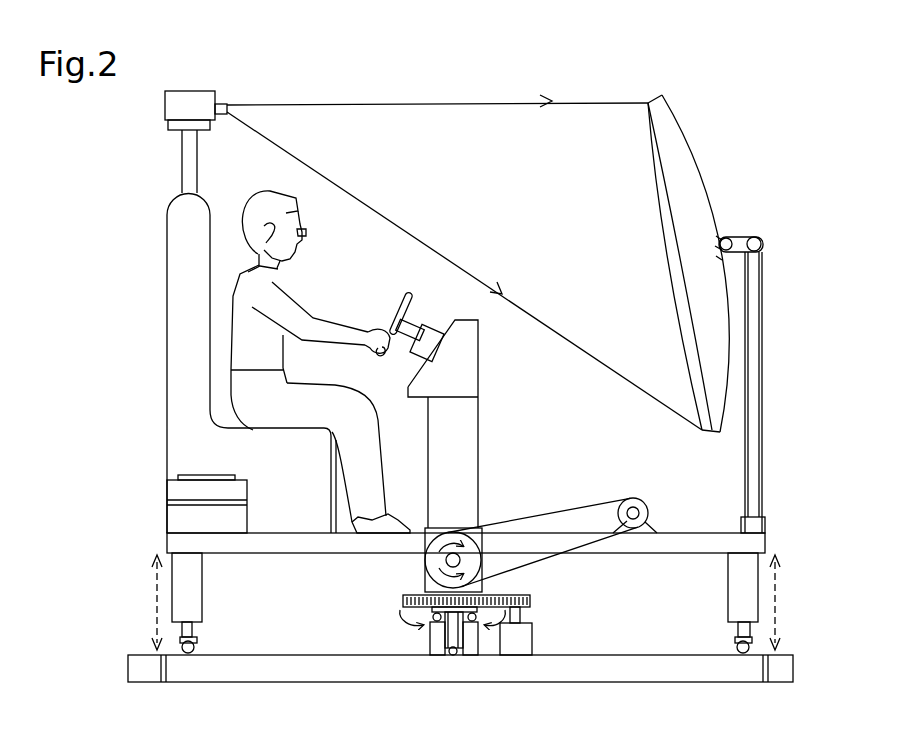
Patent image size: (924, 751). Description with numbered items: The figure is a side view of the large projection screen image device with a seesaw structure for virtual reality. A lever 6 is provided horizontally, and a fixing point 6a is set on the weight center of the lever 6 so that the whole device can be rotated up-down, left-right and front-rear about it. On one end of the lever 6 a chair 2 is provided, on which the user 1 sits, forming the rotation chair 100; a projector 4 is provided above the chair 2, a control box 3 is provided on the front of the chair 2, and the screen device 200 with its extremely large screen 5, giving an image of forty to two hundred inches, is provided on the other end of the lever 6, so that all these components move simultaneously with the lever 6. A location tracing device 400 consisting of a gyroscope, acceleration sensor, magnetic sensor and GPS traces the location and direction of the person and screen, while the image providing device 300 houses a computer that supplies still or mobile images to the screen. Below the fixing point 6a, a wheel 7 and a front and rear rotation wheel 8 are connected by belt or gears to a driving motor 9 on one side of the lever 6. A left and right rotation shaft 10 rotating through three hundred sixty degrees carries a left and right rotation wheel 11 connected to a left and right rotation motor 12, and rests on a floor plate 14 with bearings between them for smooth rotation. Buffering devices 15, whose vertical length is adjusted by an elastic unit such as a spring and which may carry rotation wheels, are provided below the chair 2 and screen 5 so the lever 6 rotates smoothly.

The user 1 is at (306, 234).
The chair 2 is at (182, 305).
The control box 3 is at (405, 298).
The projector 4 is at (170, 101).
The location tracing device 400 is at (168, 126).
The extremely large screen 5 is at (693, 150).
The lever 6 is at (322, 543).
The fixing point 6a is at (447, 560).
The driving wheel 7 is at (428, 530).
The front and rear rotation wheel 8 is at (473, 565).
The driving motor 9 is at (633, 498).
The left and right rotation shaft 10 is at (450, 635).
The left and right rotation wheel 11 is at (407, 600).
The left and right rotation motor 12 is at (523, 632).
The floor plate 14 is at (660, 673).
The buffering device 15 is at (193, 587).
The rotation chair 100 is at (420, 452).
The screen device 200 is at (722, 314).
The image providing device 300 is at (180, 520).